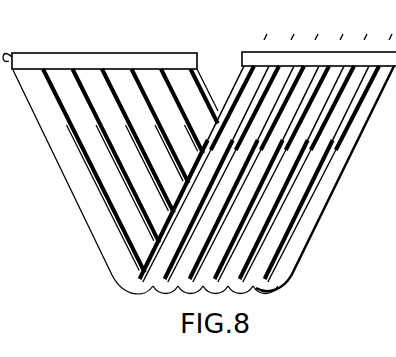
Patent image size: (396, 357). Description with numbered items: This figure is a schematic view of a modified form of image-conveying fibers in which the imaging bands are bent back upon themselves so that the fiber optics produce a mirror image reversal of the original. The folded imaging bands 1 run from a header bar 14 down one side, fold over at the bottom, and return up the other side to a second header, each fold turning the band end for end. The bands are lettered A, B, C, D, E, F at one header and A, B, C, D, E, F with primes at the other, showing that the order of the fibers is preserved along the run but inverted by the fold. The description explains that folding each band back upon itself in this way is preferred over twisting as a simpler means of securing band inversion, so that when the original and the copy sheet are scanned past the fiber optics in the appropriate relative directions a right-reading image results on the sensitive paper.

The folded imaging bands 1 is at (49, 143).
The header bar 14 is at (319, 143).
The strip A is at (145, 158).
The strip B is at (173, 158).
The strip C is at (200, 158).
The strip D is at (226, 158).
The strip E is at (253, 158).
The strip F is at (280, 158).